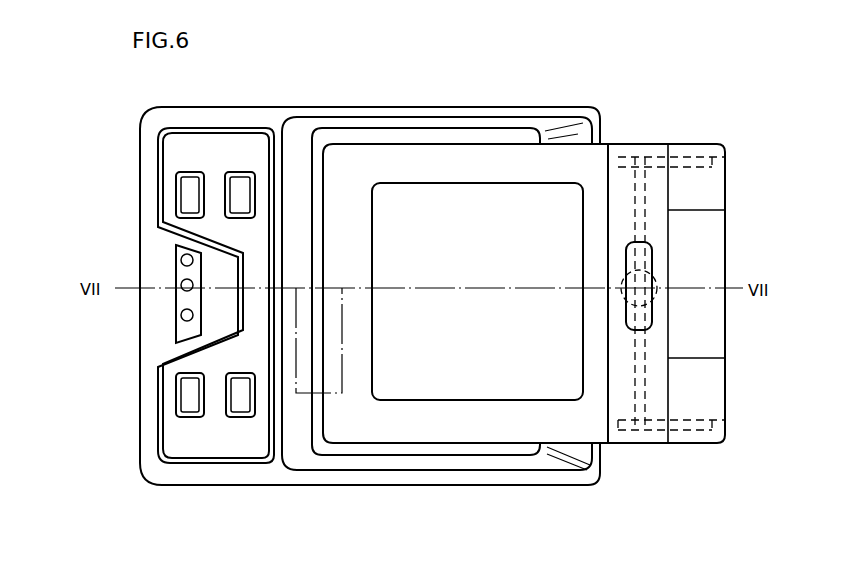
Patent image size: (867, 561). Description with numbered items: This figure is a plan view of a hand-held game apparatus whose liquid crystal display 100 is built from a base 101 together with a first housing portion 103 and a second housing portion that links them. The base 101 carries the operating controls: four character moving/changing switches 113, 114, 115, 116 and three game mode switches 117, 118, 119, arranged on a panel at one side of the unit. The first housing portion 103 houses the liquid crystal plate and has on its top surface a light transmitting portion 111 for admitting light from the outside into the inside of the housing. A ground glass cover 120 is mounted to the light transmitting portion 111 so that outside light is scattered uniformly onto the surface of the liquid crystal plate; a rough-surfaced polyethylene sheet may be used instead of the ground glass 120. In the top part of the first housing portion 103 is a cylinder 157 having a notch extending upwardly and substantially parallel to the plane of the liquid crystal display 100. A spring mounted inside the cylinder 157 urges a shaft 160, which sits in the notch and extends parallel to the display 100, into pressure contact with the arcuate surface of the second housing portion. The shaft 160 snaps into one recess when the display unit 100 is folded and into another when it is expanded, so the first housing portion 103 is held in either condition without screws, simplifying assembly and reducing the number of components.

The liquid crystal display 100 is at (315, 98).
The base 101 is at (510, 480).
The first housing portion 103 is at (593, 432).
The light transmitting portion 111 is at (554, 184).
The character moving/changing switch 113 is at (223, 178).
The character moving/changing switch 114 is at (177, 197).
The character moving/changing switch 115 is at (240, 405).
The character moving/changing switch 116 is at (187, 393).
The game mode switch 117 is at (176, 257).
The game mode switch 118 is at (181, 284).
The game mode switch 119 is at (181, 315).
The ground glass cover 120 is at (445, 190).
The cylinder 157 is at (655, 277).
The shaft 160 is at (645, 342).